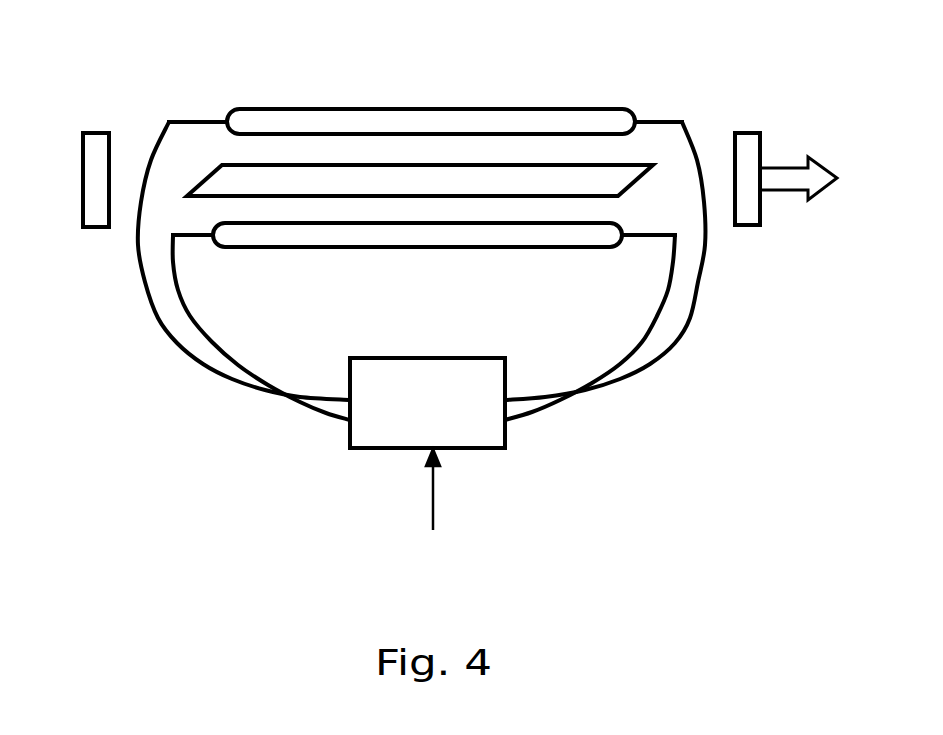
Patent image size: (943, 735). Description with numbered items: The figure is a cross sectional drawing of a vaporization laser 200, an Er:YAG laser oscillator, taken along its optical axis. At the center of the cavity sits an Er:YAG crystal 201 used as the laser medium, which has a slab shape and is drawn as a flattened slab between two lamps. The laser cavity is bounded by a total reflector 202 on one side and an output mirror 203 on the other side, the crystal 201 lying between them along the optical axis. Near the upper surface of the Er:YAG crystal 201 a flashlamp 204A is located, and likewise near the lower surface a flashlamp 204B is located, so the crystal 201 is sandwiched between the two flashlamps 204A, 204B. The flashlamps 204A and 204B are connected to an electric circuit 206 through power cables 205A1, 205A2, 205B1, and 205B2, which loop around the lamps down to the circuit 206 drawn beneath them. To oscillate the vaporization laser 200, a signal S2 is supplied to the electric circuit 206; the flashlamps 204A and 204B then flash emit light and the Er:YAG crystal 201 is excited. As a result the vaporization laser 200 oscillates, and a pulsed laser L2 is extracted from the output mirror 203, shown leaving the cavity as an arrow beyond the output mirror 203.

The vaporization laser 200 is at (90, 28).
The Er:YAG crystal 201 is at (413, 172).
The total reflector 202 is at (98, 140).
The output mirror 203 is at (748, 140).
The flashlamp 204A is at (492, 120).
The flashlamp 204B is at (484, 238).
The power cable 205A1 is at (157, 327).
The power cable 205A2 is at (670, 357).
The power cable 205B1 is at (212, 342).
The power cable 205B2 is at (625, 365).
The electric circuit 206 is at (426, 358).
The pulsed laser L2 is at (787, 175).
The signal S2 is at (434, 506).